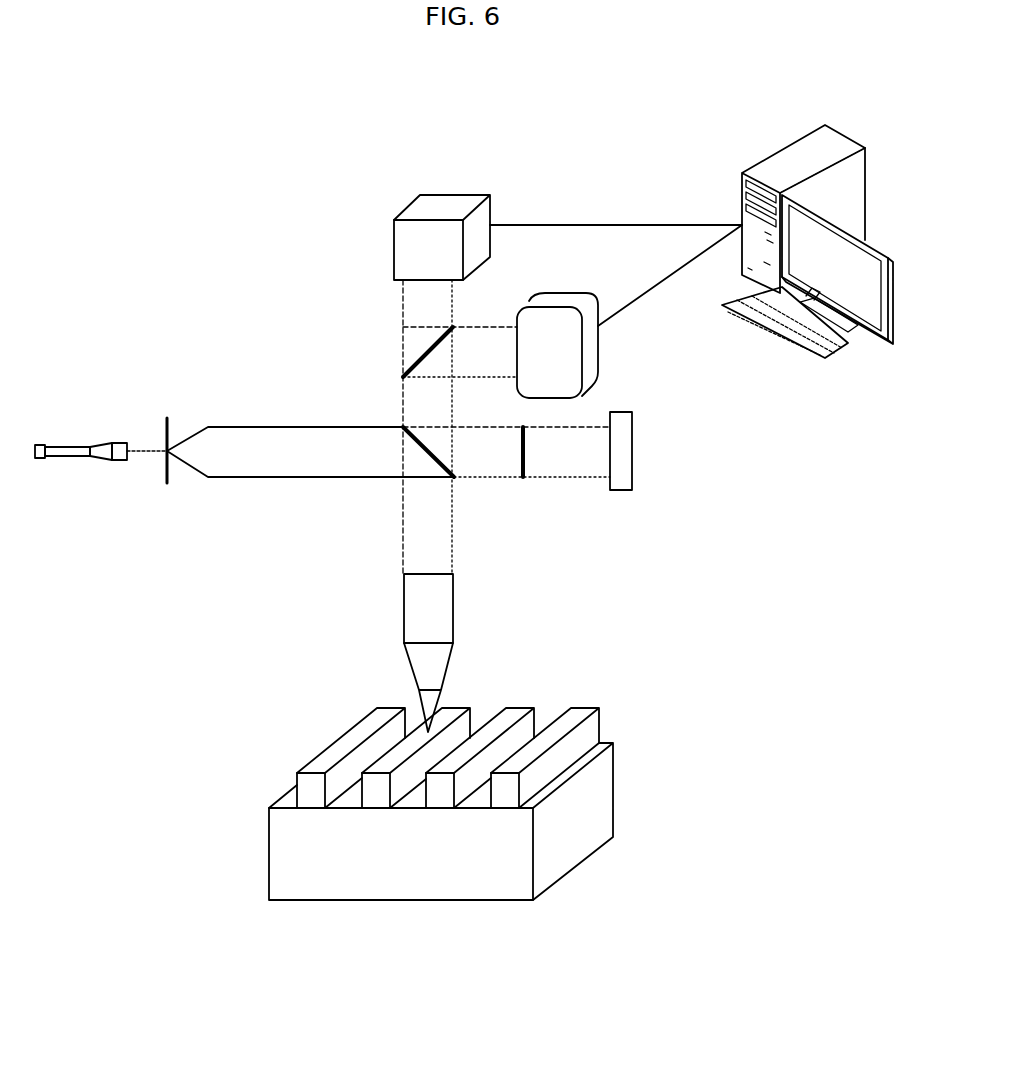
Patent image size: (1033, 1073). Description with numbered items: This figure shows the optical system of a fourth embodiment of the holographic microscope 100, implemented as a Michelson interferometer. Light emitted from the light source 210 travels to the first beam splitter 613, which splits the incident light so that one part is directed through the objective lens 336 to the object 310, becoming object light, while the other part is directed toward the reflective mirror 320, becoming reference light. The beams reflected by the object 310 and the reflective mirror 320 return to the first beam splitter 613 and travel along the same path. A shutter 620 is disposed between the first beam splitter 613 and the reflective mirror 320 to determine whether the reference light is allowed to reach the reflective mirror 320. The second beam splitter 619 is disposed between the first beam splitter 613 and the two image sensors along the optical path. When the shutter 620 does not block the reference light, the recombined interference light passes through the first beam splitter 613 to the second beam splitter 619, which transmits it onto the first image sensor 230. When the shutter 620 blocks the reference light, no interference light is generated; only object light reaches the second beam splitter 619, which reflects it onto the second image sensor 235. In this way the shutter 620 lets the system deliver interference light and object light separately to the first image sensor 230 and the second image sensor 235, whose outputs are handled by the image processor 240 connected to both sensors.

The holographic microscope 100 is at (148, 161).
The light source 210 is at (66, 445).
The first image sensor 230 is at (438, 195).
The second image sensor 235 is at (598, 350).
The image processor 240 is at (790, 145).
The object 310 is at (613, 792).
The reflective mirror 320 is at (632, 450).
The objective lens 336 is at (404, 612).
The first beam splitter 613 is at (403, 477).
The second beam splitter 619 is at (403, 375).
The shutter 620 is at (525, 455).